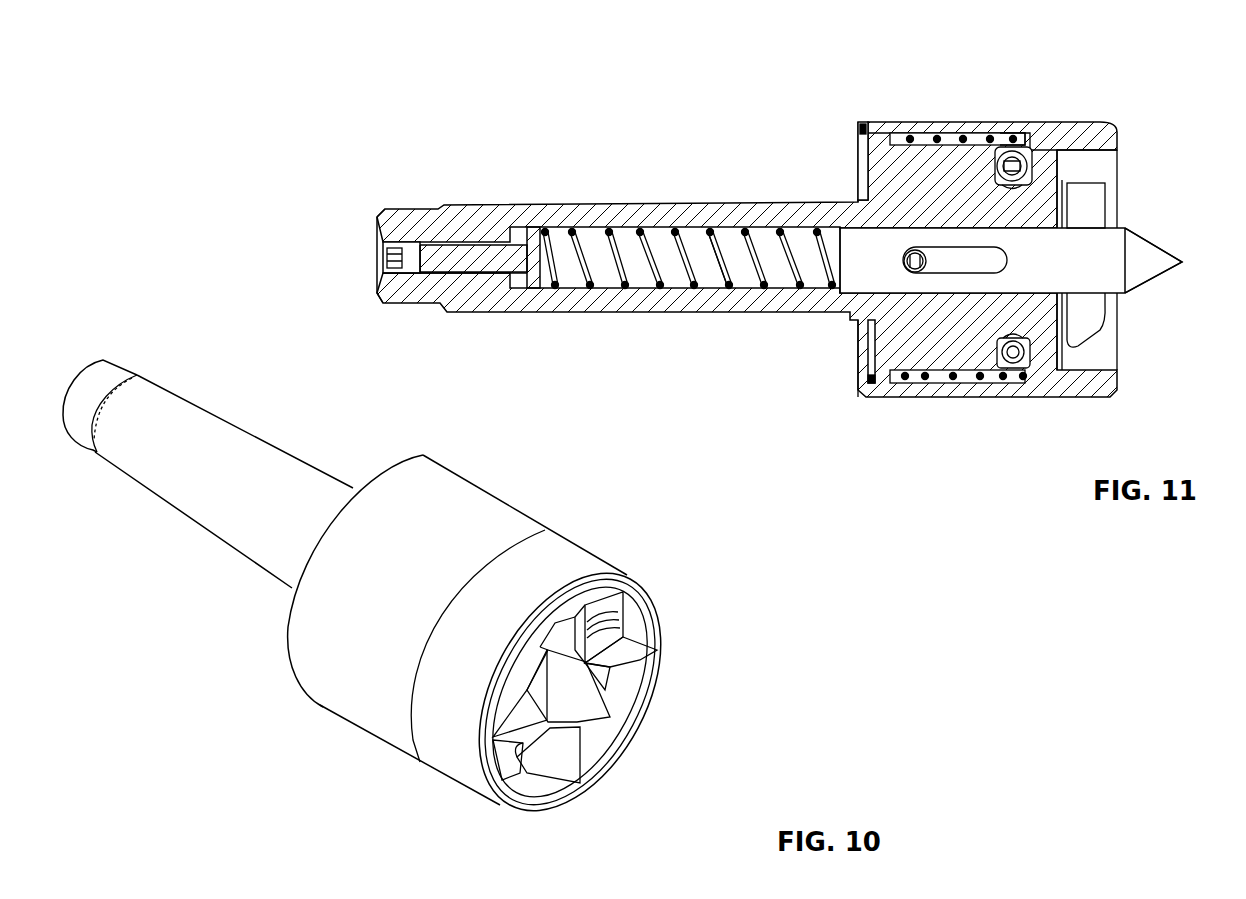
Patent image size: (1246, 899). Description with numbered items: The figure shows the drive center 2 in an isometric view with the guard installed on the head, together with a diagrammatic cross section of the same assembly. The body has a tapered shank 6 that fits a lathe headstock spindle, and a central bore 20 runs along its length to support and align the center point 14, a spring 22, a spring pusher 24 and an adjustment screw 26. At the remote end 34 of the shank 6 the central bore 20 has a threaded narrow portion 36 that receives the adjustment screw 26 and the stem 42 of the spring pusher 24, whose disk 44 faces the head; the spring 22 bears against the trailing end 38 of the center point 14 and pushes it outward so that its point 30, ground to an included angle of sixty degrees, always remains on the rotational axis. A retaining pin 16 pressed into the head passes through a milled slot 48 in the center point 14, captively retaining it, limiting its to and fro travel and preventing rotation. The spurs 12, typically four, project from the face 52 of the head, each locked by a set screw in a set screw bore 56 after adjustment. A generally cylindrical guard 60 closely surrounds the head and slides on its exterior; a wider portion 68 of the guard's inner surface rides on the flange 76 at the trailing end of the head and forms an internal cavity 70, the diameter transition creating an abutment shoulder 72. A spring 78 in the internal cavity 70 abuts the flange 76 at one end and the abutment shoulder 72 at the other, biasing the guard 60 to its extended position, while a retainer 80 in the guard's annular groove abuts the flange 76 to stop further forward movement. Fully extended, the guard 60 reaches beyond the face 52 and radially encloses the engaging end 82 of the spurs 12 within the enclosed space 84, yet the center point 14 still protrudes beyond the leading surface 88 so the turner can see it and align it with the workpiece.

In FIG. 11, the drive center 2 is at (689, 127).
In FIG. 10, the drive center 2 is at (230, 714).
In FIG. 11, the shank 6 is at (575, 312).
In FIG. 10, the shank 6 is at (222, 437).
In FIG. 10, the spurs 12 is at (543, 757).
In FIG. 11, the center point 14 is at (1090, 262).
In FIG. 11, the retaining pin 16 is at (921, 274).
In FIG. 11, the central bore 20 is at (620, 232).
In FIG. 11, the spring 22 is at (718, 240).
In FIG. 11, the spring pusher 24 is at (470, 255).
In FIG. 11, the adjustment screw 26 is at (410, 265).
In FIG. 11, the point 30 is at (1182, 262).
In FIG. 10, the point 30 is at (612, 715).
In FIG. 11, the remote end 34 is at (380, 202).
In FIG. 11, the narrow portion 36 is at (467, 273).
In FIG. 11, the trailing end 38 is at (848, 235).
In FIG. 11, the stem 42 is at (440, 250).
In FIG. 11, the disk 44 is at (530, 232).
In FIG. 11, the milled slot 48 is at (952, 263).
In FIG. 11, the face 52 is at (1057, 162).
In FIG. 10, the face 52 is at (600, 603).
In FIG. 11, the set screw bore 56 is at (1013, 355).
In FIG. 11, the guard 60 is at (1045, 130).
In FIG. 10, the guard 60 is at (522, 512).
In FIG. 11, the wider portion 68 is at (1005, 135).
In FIG. 11, the internal cavity 70 is at (918, 130).
In FIG. 11, the abutment shoulder 72 is at (1042, 125).
In FIG. 11, the flange 76 is at (872, 385).
In FIG. 11, the spring 78 is at (965, 135).
In FIG. 11, the retainer 80 is at (862, 125).
In FIG. 11, the engaging end 82 is at (1105, 195).
In FIG. 10, the engaging end 82 is at (650, 673).
In FIG. 11, the space 84 is at (1090, 360).
In FIG. 10, the leading surface 88 is at (648, 603).